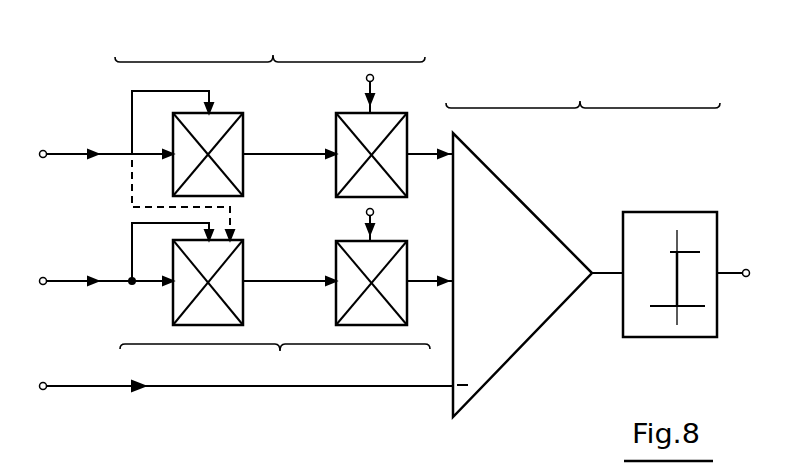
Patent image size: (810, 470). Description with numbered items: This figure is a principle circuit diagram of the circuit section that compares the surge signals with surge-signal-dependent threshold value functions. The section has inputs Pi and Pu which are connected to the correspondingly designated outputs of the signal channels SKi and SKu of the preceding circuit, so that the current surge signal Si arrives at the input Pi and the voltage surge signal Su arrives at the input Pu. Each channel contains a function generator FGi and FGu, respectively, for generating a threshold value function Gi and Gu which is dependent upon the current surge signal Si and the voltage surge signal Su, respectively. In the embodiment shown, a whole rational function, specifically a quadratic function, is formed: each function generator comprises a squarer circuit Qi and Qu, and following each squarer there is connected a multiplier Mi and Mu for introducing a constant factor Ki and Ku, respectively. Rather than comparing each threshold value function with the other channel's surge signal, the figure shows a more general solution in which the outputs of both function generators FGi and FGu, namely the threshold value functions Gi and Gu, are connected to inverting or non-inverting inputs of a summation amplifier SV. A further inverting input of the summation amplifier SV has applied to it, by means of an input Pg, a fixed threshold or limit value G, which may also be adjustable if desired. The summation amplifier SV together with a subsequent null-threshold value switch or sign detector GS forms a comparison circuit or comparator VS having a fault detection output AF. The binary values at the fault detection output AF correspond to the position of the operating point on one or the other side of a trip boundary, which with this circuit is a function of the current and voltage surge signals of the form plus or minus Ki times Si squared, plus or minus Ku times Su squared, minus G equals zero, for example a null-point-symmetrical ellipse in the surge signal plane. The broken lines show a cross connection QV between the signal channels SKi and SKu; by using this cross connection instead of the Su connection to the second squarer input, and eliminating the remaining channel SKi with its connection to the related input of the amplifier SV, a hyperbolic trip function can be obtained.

The input Pi is at (94, 154).
The current surge signal Si is at (93, 148).
The signal channel SKi is at (118, 186).
The cross connection QV is at (132, 200).
The function generator FGi is at (270, 44).
The squarer circuit Qi is at (240, 140).
The multiplier Mi is at (343, 140).
The constant factor Ki is at (376, 98).
The threshold value function Gi is at (431, 148).
The input Pu is at (93, 281).
The voltage surge signal Su is at (92, 275).
The signal channel SKu is at (125, 315).
The function generator FGu is at (275, 358).
The squarer circuit Qu is at (240, 262).
The multiplier Mu is at (343, 268).
The constant factor Ku is at (376, 224).
The threshold value function Gu is at (430, 275).
The input Pg is at (233, 386).
The fixed threshold value G is at (140, 392).
The comparison circuit VS is at (583, 93).
The summation amplifier SV is at (522, 217).
The null-threshold value switch GS is at (663, 220).
The fault detection output AF is at (747, 278).